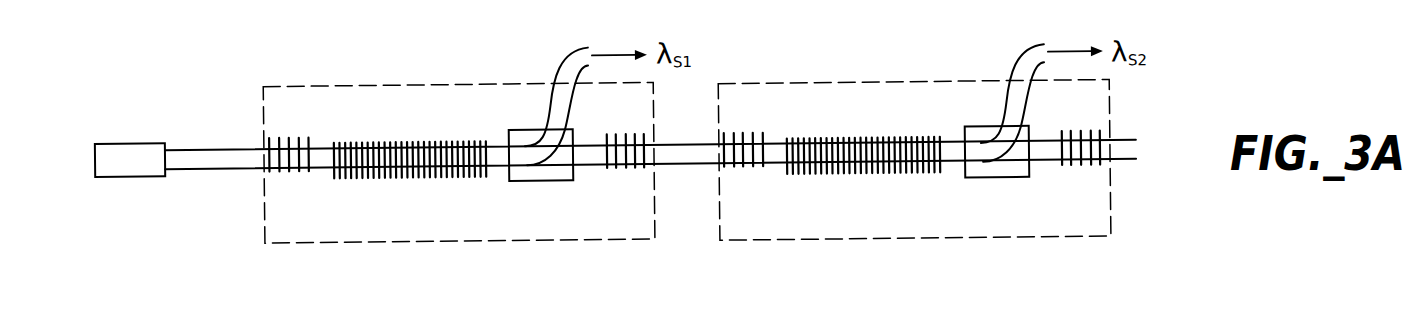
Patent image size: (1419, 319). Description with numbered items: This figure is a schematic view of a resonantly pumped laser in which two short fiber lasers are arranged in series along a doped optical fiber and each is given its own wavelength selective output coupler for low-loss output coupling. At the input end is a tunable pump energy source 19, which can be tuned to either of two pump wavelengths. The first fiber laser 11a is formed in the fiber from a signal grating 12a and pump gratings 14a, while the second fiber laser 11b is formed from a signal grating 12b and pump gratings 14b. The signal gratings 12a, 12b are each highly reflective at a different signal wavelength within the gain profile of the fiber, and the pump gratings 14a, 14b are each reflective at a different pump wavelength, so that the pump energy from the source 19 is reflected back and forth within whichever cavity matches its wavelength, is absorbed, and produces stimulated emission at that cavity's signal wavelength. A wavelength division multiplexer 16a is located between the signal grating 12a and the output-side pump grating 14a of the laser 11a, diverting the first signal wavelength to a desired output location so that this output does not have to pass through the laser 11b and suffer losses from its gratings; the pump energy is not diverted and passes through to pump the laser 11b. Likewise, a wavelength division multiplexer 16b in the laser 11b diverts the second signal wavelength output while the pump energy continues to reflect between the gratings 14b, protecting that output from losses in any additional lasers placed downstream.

The tunable pump energy source 19 is at (132, 145).
The fiber laser 11a is at (263, 209).
The fiber laser 11b is at (1112, 107).
The signal grating 12a is at (486, 178).
The signal grating 12b is at (940, 179).
The pump grating 14a is at (283, 134).
The pump grating 14b is at (745, 135).
The wavelength division multiplexer 16a is at (560, 181).
The wavelength division multiplexer 16b is at (1017, 183).